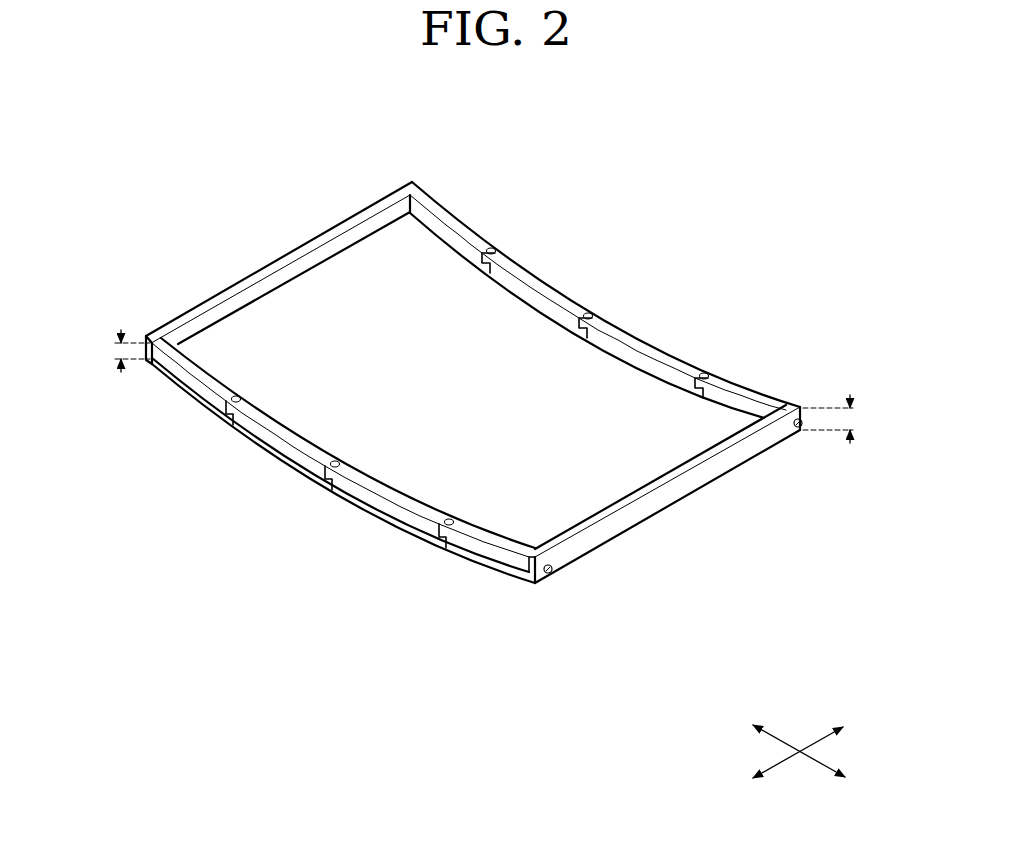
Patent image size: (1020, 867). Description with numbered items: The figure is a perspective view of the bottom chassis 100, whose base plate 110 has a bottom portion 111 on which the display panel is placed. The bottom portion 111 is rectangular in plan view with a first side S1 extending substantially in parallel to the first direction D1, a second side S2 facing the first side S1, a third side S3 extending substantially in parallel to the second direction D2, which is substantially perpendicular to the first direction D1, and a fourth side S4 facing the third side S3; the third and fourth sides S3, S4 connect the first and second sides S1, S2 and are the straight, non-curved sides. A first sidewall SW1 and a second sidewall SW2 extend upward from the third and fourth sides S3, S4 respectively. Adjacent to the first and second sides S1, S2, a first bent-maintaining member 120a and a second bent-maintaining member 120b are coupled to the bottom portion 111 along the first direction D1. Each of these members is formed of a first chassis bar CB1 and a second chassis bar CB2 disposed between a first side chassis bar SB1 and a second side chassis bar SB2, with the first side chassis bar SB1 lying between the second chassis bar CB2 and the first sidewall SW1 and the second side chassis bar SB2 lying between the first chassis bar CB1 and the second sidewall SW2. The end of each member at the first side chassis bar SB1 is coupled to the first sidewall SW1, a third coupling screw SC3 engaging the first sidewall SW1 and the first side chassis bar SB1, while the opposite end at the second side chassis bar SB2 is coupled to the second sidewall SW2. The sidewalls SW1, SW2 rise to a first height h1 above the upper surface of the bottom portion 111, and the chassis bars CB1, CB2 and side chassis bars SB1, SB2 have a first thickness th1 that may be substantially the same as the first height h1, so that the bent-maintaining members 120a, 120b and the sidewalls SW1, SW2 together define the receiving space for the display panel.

The bottom chassis 100 is at (714, 237).
The base plate 110 is at (392, 246).
The bottom portion 111 is at (352, 283).
The first bent-maintaining member 120a is at (770, 391).
The second bent-maintaining member 120b is at (425, 499).
The first side S1 is at (562, 332).
The second side S2 is at (378, 520).
The third side S3 is at (645, 525).
The fourth side S4 is at (268, 296).
The first sidewall SW1 is at (690, 481).
The second sidewall SW2 is at (216, 302).
The first chassis bar CB1 is at (541, 292).
The second chassis bar CB2 is at (634, 347).
The first side chassis bar SB1 is at (729, 388).
The second side chassis bar SB2 is at (453, 228).
The third coupling screw SC3 is at (808, 429).
The first thickness th1 is at (112, 351).
The first height h1 is at (843, 419).
The first direction D1 is at (813, 765).
The second direction D2 is at (813, 741).